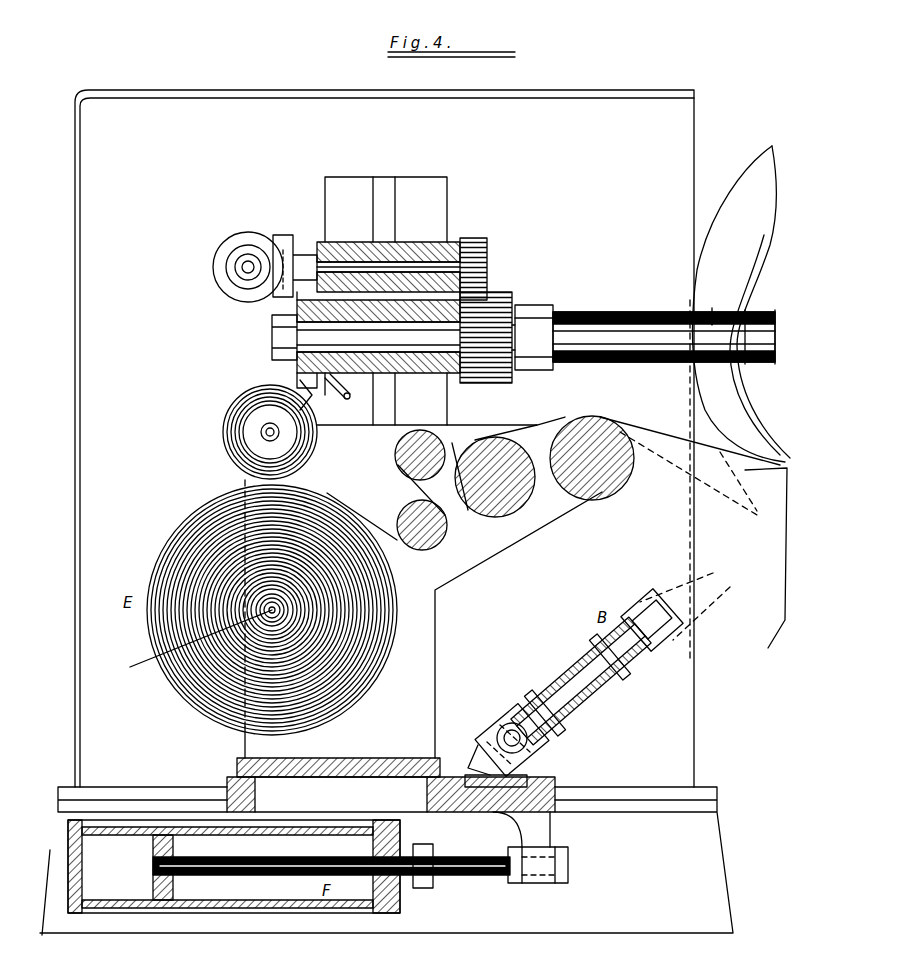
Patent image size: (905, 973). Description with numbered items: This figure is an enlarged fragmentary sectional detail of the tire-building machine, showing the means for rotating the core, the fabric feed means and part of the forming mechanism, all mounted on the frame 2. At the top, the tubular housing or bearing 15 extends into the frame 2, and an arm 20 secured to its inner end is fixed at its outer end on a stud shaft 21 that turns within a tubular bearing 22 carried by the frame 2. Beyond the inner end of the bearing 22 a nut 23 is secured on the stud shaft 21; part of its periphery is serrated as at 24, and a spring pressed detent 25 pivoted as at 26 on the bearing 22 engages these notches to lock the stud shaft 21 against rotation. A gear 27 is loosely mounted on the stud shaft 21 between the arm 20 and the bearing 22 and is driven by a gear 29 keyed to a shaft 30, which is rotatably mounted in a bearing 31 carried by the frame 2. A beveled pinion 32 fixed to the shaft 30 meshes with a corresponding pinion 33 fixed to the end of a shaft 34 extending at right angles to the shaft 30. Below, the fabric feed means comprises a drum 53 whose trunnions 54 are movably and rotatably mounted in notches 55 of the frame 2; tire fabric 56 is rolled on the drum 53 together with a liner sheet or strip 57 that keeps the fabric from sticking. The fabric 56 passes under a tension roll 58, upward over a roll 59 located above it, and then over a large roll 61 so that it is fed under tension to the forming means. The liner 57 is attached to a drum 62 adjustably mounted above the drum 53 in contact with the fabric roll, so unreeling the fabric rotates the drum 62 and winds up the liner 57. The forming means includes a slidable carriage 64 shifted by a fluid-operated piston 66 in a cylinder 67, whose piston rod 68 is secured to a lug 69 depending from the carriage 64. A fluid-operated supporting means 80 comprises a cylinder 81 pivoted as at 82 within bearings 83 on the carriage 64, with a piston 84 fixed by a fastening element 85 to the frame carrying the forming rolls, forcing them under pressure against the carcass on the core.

The frame 2 is at (72, 491).
The tubular housing or bearing 15 is at (605, 312).
The arm 20 is at (540, 305).
The stud shaft 21 is at (518, 305).
The tubular bearing 22 is at (418, 373).
The nut 23 is at (275, 358).
The serrations or notches 24 is at (322, 340).
The spring pressed detent 25 is at (322, 400).
The pivot 26 is at (343, 397).
The gear 27 is at (496, 292).
The gear 29 is at (472, 238).
The shaft 30 is at (405, 242).
The bearing 31 is at (340, 242).
The beveled pinion 32 is at (283, 236).
The pinion 33 is at (228, 240).
The shaft 34 is at (238, 278).
The drum 53 is at (215, 707).
The trunnions 54 is at (272, 610).
The notches 55 is at (200, 652).
The tire fabric 56 is at (368, 518).
The liner sheet or strip 57 is at (305, 467).
The tension roll 58 is at (438, 543).
The roll 59 is at (450, 440).
The large roll 61 is at (585, 498).
The drum 62 is at (225, 432).
The carriage 64 is at (440, 740).
The fluid-operated piston 66 is at (163, 905).
The cylinder 67 is at (135, 905).
The piston rod 68 is at (275, 880).
The lug 69 is at (537, 880).
The fluid-operated supporting means 80 is at (570, 736).
The cylinder 81 is at (530, 755).
The pivot 82 is at (500, 720).
The bearings 83 is at (527, 781).
The piston 84 is at (572, 690).
The fastening element 85 is at (650, 610).